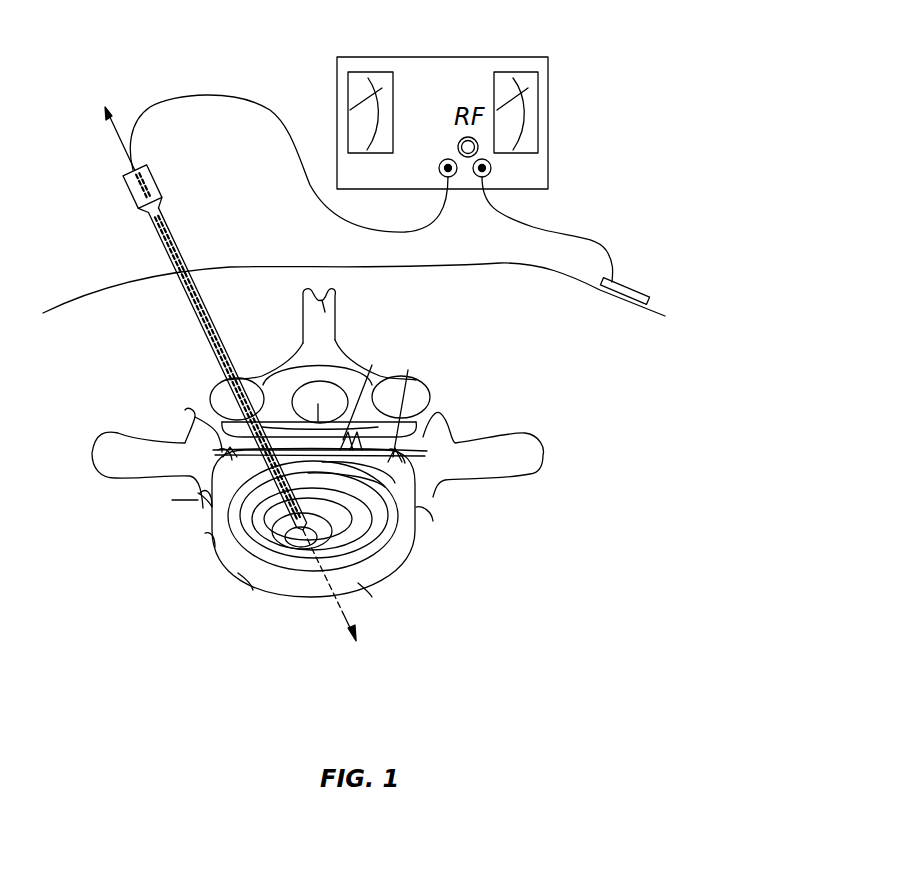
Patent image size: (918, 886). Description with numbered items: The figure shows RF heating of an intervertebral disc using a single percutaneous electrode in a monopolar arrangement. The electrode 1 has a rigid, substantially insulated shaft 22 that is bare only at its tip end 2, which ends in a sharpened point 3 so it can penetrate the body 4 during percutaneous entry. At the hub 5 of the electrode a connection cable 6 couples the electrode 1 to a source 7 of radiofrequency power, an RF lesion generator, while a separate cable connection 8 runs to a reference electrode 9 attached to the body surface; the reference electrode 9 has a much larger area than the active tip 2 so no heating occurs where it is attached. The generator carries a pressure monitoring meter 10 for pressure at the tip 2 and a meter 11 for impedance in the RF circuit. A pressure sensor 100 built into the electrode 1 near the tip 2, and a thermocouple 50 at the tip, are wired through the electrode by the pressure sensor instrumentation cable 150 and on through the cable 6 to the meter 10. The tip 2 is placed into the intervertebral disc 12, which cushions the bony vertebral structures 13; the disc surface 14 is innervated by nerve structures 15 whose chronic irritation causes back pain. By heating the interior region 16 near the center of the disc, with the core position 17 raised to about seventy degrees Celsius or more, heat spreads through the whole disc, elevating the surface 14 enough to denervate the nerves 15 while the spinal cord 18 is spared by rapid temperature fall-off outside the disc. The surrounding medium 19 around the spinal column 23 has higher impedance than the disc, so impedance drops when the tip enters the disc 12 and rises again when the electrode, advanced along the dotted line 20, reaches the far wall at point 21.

The electrode 1 is at (217, 374).
The tip end 2 is at (252, 563).
The sharpened point 3 is at (273, 550).
The body 4 is at (237, 265).
The hub 5 is at (127, 192).
The connection cable 6 is at (180, 98).
The source of radiofrequency power 7 is at (510, 56).
The cable connection 8 is at (576, 232).
The reference electrode 9 is at (633, 285).
The pressure monitoring meter 10 is at (538, 110).
The impedance meter 11 is at (348, 105).
The intervertebral disc 12 is at (397, 530).
The bony vertebral structures 13 is at (533, 453).
The surface of the disc 14 is at (238, 560).
The nerve structures 15 is at (185, 558).
The interior region 16 is at (373, 567).
The core position 17 is at (287, 557).
The spinal cord 18 is at (322, 390).
The medium 19 is at (487, 343).
The dotted line 20 is at (302, 557).
The point at far wall of the disc 21 is at (368, 575).
The insulated shaft 22 is at (208, 313).
The spinal column 23 is at (143, 377).
The thermocouple 50 is at (382, 570).
The pressure sensor 100 is at (305, 528).
The pressure sensor instrumentation cable 150 is at (163, 240).